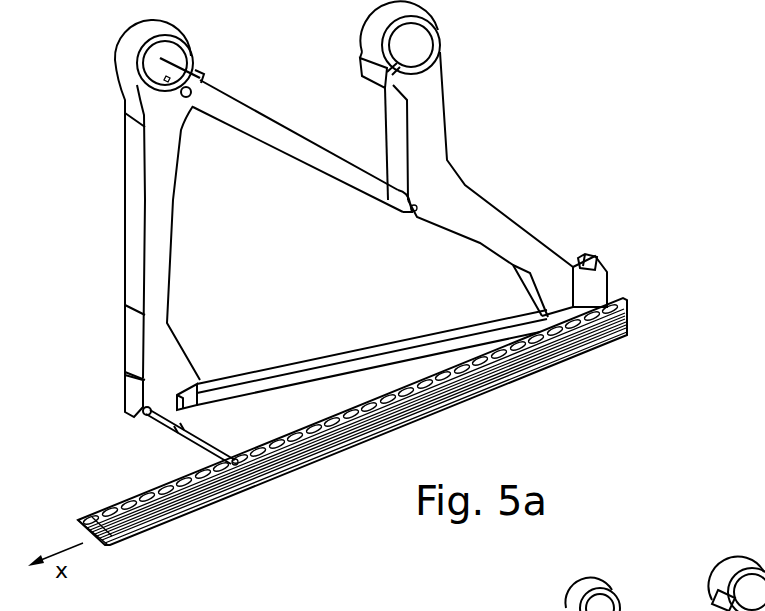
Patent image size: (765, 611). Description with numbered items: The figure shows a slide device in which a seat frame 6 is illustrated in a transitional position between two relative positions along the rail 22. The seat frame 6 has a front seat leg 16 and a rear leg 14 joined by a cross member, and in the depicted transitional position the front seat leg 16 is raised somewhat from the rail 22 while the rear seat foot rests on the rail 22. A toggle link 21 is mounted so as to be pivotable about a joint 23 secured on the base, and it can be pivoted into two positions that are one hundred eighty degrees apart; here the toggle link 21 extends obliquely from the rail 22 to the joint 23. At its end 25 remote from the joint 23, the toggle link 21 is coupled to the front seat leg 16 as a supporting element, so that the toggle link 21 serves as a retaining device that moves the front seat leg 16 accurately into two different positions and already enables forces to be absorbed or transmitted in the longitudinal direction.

The seat frame 6 is at (545, 148).
The right support arm 14 is at (470, 198).
The front seat leg 16 is at (135, 197).
The toggle link 21 is at (222, 442).
The rail 22 is at (625, 320).
The joint 23 is at (245, 466).
The end 25 is at (152, 420).